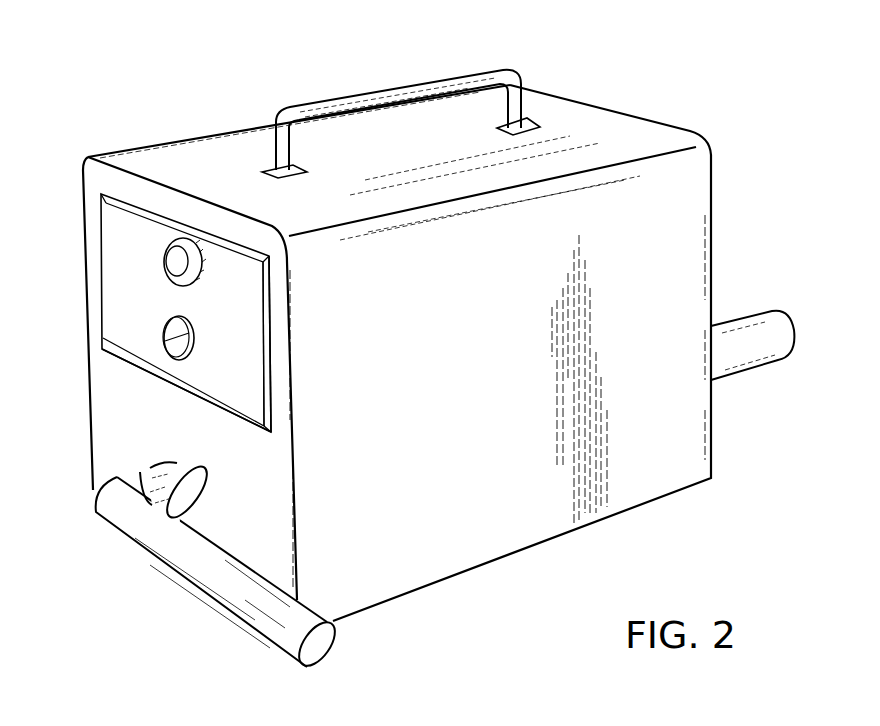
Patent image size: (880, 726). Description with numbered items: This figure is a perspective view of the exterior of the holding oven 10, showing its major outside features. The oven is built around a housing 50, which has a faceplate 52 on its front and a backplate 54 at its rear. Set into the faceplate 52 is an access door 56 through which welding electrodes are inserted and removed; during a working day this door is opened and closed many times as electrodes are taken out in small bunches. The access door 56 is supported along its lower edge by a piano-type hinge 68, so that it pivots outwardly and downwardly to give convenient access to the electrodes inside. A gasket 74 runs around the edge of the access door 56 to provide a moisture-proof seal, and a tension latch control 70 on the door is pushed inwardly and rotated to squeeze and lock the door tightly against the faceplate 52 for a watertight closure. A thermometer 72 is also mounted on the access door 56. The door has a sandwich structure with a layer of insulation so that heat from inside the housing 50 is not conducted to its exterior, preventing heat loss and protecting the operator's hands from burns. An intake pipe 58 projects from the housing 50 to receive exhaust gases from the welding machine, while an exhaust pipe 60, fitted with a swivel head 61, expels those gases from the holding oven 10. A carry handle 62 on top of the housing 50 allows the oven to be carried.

The holding oven 10 is at (122, 99).
The housing 50 is at (487, 567).
The faceplate 52 is at (97, 412).
The backplate 54 is at (714, 192).
The access door 56 is at (112, 288).
The intake pipe 58 is at (742, 373).
The exhaust pipe 60 is at (183, 483).
The swivel head 61 is at (203, 592).
The carry handle 62 is at (389, 90).
The hinge 68 is at (103, 350).
The tension latch control 70 is at (163, 262).
The thermometer 72 is at (190, 325).
The gasket 74 is at (267, 363).